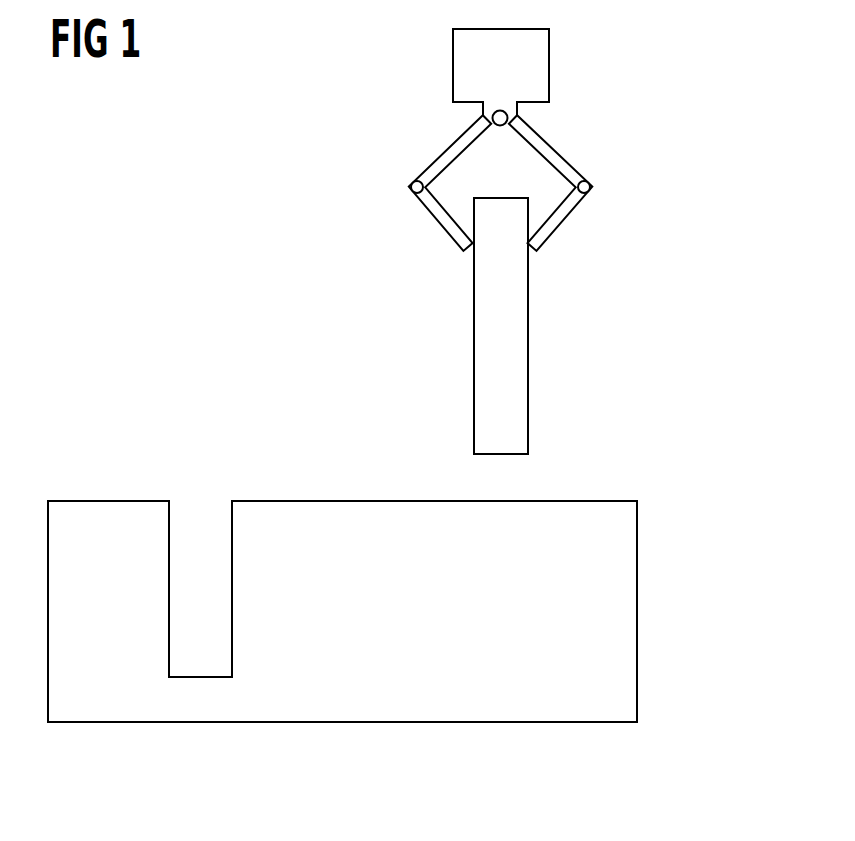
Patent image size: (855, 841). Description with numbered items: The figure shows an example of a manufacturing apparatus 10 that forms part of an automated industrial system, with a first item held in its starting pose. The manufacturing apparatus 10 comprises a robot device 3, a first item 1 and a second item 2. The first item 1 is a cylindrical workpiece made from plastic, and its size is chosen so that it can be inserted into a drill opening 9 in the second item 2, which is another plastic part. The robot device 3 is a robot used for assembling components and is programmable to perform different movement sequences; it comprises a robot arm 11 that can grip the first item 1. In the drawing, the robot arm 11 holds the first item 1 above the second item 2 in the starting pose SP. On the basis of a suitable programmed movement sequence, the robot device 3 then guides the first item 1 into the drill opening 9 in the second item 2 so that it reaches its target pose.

The first item 1 is at (518, 378).
The second item 2 is at (637, 612).
The robot device 3 is at (540, 63).
The drill opening 9 is at (205, 495).
The manufacturing apparatus 10 is at (710, 262).
The robot arm 11 is at (565, 218).